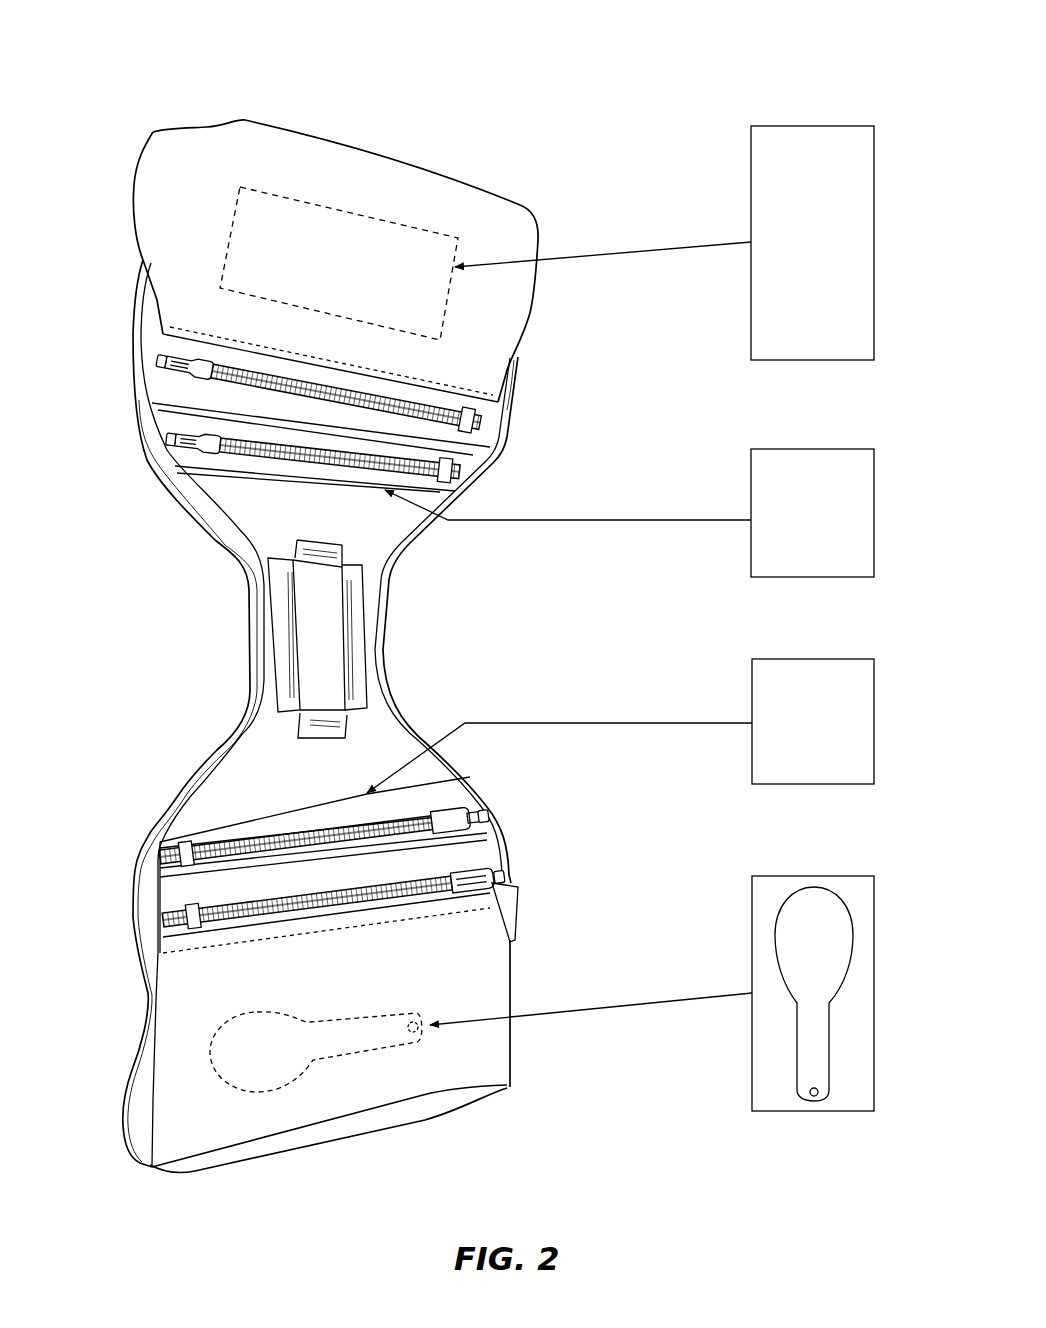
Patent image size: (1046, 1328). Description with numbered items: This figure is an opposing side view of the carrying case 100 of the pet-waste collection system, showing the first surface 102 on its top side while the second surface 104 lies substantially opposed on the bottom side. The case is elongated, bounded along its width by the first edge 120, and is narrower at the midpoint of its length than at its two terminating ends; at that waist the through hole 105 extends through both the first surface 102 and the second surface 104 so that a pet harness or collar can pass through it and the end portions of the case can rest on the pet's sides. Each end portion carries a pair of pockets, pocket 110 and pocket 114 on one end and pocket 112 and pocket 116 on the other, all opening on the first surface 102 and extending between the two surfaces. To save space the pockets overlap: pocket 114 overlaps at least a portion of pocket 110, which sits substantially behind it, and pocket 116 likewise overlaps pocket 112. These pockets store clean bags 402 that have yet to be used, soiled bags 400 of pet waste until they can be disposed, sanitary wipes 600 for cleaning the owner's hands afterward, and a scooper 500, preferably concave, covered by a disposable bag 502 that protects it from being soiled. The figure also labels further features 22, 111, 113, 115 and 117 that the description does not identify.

The carrying case 100 is at (150, 75).
The identification window 22 is at (407, 247).
The pocket 116 is at (490, 338).
The upper zipper 117 is at (215, 380).
The second upper zipper 113 is at (428, 462).
The pocket 112 is at (478, 485).
The first surface 102 is at (363, 493).
The through hole 105 is at (320, 630).
The second surface 104 is at (350, 750).
The pocket 110 is at (393, 791).
The lower zipper 111 is at (415, 815).
The bottom zipper 115 is at (163, 915).
The pocket 114 is at (488, 955).
The first edge 120 is at (260, 1073).
The sanitary wipes 600 is at (845, 288).
The clean bags 402 is at (862, 497).
The soiled bags 400 is at (862, 723).
The disposable bag 502 is at (863, 897).
The scooper 500 is at (842, 945).